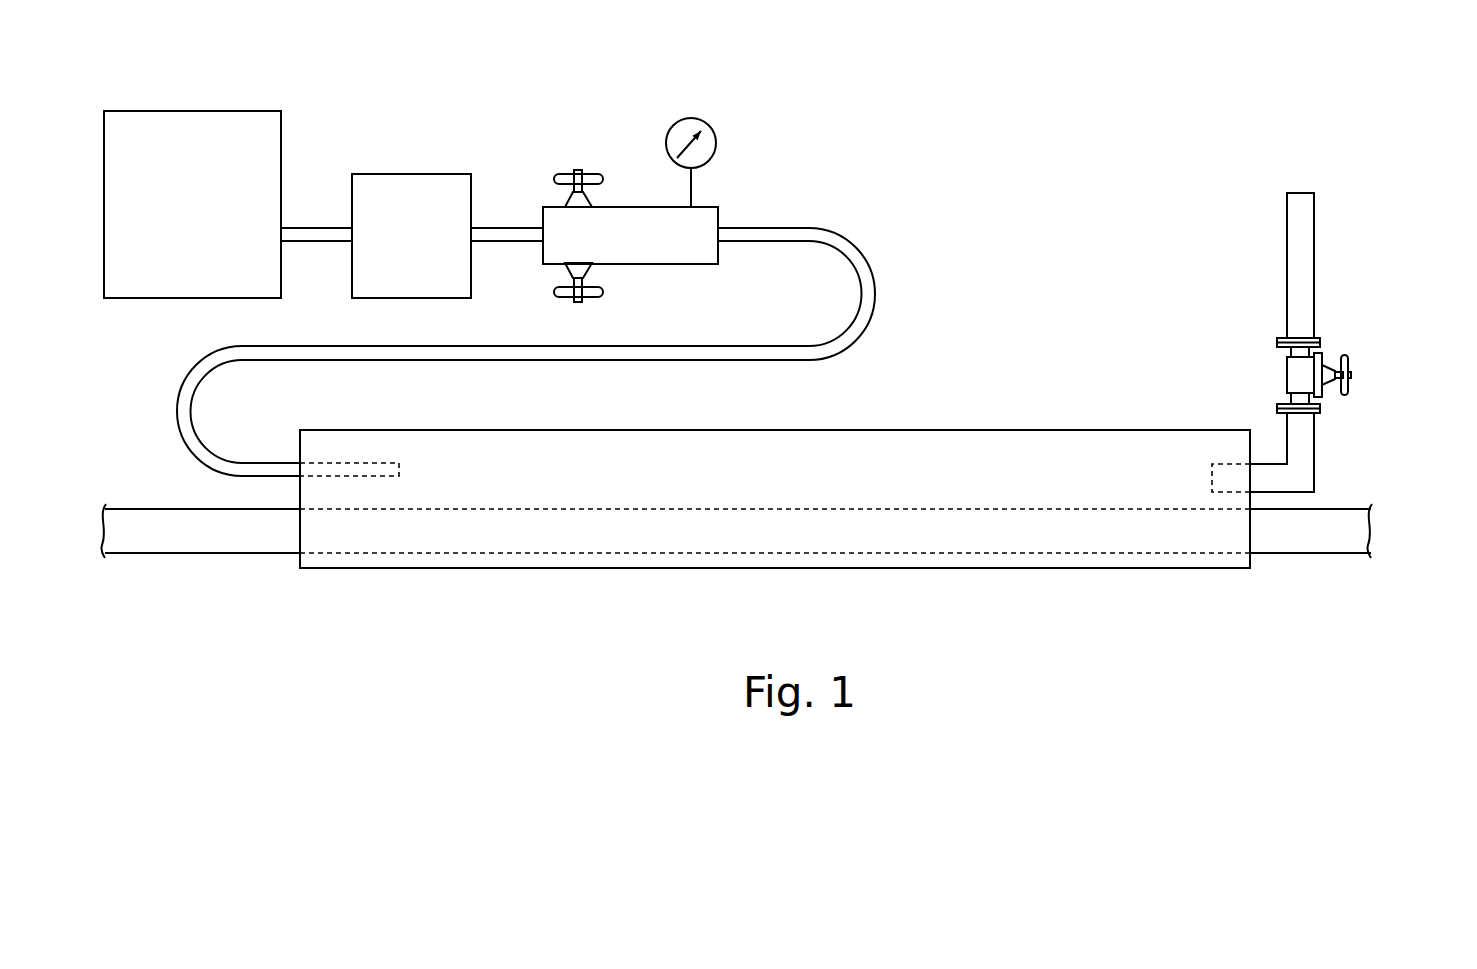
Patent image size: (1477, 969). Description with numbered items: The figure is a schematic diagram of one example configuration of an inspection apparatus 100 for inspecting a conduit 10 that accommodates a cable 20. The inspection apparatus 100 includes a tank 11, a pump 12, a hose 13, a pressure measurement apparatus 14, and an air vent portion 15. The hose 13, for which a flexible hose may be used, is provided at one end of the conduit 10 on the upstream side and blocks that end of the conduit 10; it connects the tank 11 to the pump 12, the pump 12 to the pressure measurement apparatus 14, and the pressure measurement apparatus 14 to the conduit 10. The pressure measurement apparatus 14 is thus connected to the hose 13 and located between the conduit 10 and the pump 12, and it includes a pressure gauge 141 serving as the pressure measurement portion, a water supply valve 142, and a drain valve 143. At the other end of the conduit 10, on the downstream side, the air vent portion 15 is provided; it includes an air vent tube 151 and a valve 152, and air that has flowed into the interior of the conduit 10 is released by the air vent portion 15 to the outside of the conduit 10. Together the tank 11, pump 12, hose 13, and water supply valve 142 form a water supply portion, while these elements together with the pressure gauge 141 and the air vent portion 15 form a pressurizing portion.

The inspection apparatus 100 is at (1146, 152).
The conduit 10 is at (1035, 429).
The tank 11 is at (187, 111).
The pump 12 is at (415, 174).
The hose 13 is at (873, 278).
The pressure measurement apparatus 14 is at (628, 162).
The pressure gauge 141 is at (693, 136).
The water supply valve 142 is at (566, 170).
The drain valve 143 is at (603, 292).
The air vent portion 15 is at (1358, 342).
The air vent tube 151 is at (1302, 442).
The valve 152 is at (1350, 388).
The cable 20 is at (1310, 553).